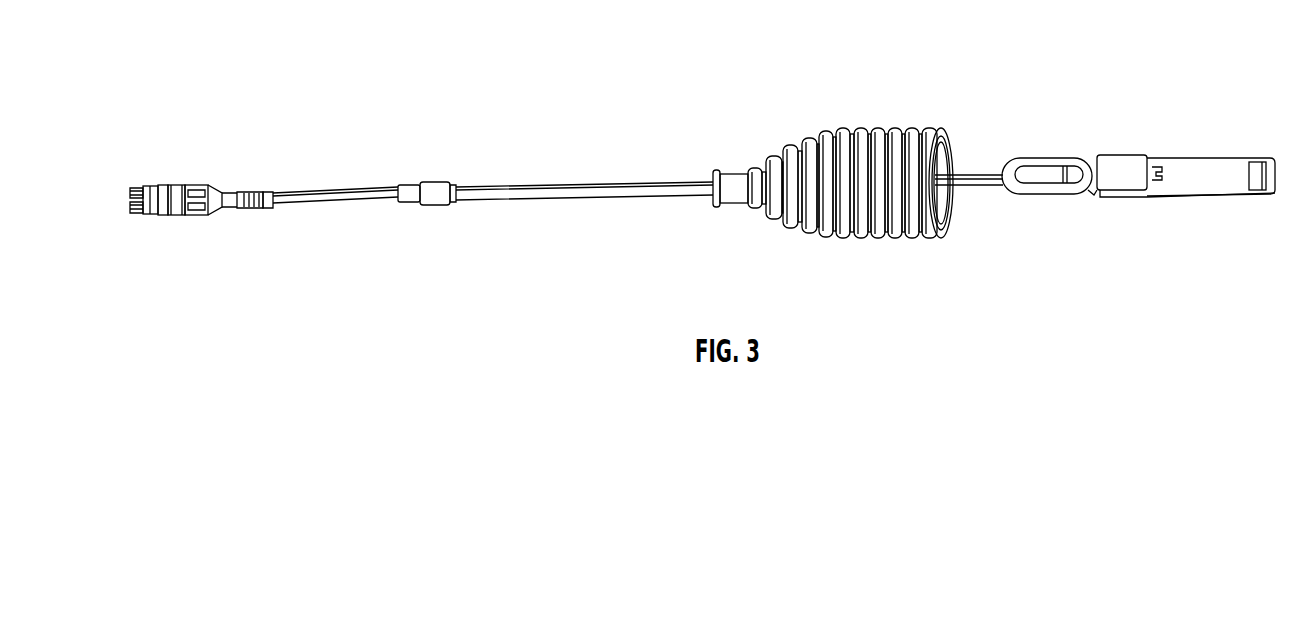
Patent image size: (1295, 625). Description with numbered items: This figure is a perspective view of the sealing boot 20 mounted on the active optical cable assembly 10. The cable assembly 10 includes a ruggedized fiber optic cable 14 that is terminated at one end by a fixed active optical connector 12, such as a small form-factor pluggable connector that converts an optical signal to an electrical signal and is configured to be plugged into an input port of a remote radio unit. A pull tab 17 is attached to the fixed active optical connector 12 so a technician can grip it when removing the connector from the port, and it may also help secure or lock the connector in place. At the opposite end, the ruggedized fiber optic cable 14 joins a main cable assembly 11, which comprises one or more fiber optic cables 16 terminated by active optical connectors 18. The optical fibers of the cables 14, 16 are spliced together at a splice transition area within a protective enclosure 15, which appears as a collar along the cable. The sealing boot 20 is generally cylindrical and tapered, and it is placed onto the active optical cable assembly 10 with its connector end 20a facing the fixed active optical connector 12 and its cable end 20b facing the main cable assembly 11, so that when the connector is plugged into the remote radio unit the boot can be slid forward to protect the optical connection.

The active optical cable assembly 10 is at (568, 62).
The main cable assembly 11 is at (450, 142).
The fixed active optical connector 12 is at (1193, 178).
The fiber optic cable 14 is at (573, 192).
The protective enclosure 15 is at (437, 195).
The fiber optic cable 16 is at (307, 197).
The pull tab 17 is at (1055, 162).
The active optical connector 18 is at (173, 207).
The sealing boot 20 is at (883, 105).
The connector end 20a is at (968, 225).
The cable end 20b is at (695, 163).